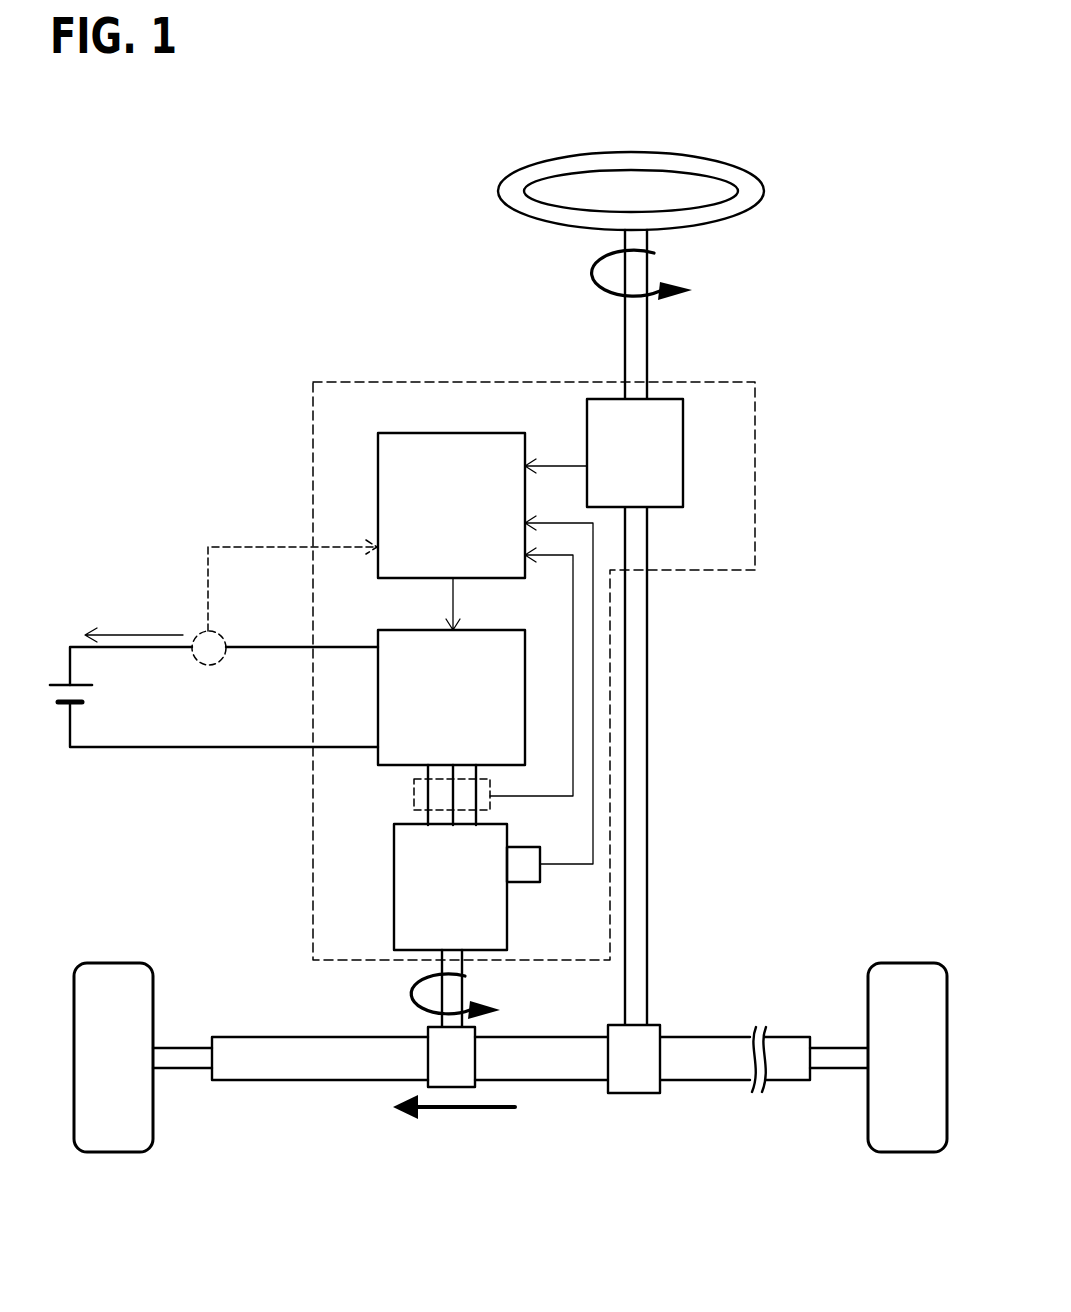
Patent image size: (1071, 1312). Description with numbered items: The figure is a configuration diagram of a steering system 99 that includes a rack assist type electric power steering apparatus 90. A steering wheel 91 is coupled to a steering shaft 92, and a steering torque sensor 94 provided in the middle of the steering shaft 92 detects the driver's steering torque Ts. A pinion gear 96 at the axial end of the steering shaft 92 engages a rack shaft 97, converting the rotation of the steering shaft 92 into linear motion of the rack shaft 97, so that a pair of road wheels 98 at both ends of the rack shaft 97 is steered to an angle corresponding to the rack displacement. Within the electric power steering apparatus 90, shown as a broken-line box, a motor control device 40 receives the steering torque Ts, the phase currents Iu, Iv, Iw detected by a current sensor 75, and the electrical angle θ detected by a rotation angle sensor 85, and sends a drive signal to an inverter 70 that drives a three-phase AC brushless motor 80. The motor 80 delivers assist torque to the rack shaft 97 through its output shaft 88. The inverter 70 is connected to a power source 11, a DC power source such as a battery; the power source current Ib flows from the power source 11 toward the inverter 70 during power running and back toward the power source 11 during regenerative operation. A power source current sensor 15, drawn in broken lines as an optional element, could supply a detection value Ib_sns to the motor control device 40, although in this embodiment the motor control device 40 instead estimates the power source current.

The power source 11 is at (60, 684).
The power source current sensor 15 is at (209, 666).
The motor control device 40 is at (378, 485).
The inverter 70 is at (378, 694).
The current sensor 75 is at (414, 800).
The motor 80 is at (394, 890).
The rotation angle sensor 85 is at (527, 882).
The output shaft 88 is at (453, 987).
The electric power steering apparatus 90 is at (418, 380).
The steering wheel 91 is at (753, 196).
The steering shaft 92 is at (638, 331).
The steering torque sensor 94 is at (683, 449).
The pinion gear 96 is at (638, 1070).
The rack shaft 97 is at (285, 1067).
The road wheels 98 is at (112, 1130).
The steering system 99 is at (247, 342).